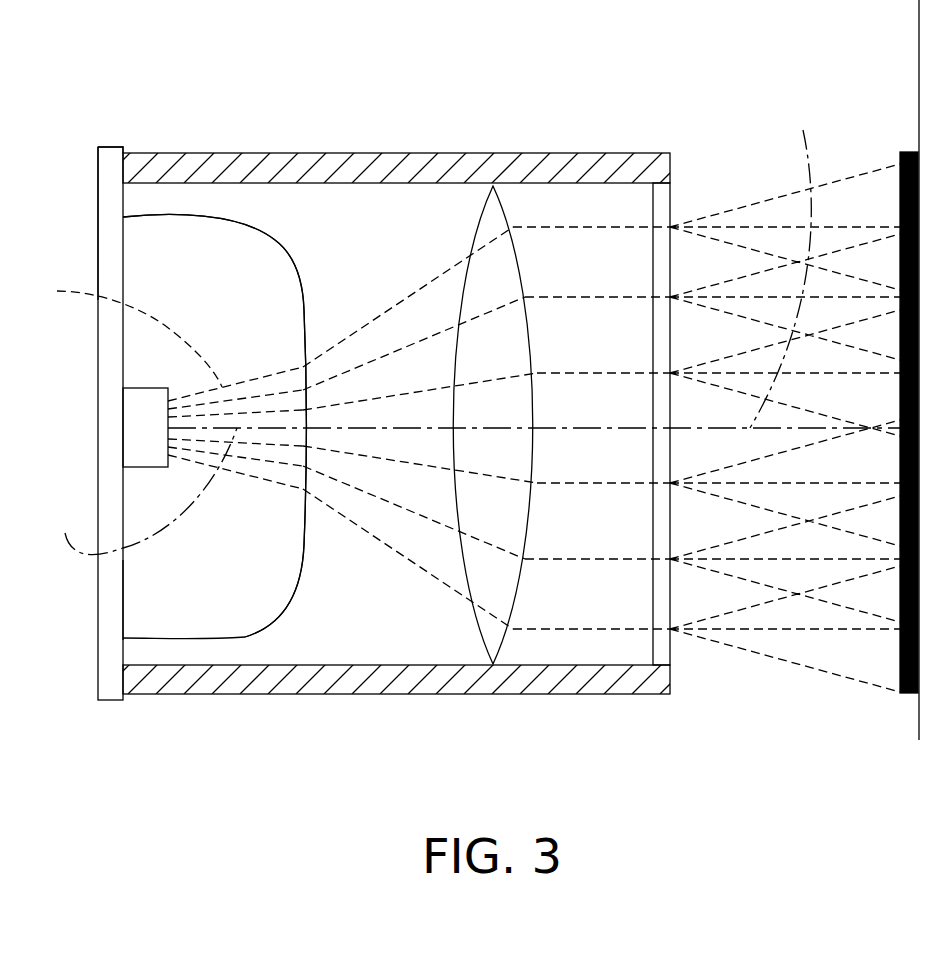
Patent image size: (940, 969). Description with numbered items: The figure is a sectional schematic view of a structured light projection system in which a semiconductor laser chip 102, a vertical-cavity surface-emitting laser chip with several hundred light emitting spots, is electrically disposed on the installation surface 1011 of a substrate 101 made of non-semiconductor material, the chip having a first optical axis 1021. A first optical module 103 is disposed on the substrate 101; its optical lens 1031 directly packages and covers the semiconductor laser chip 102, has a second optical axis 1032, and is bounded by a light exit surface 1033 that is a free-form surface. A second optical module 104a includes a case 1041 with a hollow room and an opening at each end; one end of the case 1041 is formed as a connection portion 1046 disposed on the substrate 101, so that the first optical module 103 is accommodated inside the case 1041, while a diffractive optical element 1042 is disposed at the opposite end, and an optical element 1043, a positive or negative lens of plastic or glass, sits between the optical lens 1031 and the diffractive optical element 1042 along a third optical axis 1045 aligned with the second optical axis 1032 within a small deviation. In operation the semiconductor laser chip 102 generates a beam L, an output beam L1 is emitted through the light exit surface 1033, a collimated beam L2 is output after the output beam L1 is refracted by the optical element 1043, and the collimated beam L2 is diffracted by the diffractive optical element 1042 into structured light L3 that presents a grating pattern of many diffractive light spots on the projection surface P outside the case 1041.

The substrate 101 is at (108, 441).
The installation surface 1011 is at (142, 612).
The semiconductor laser chip 102 is at (147, 398).
The first optical axis 1021 is at (135, 491).
The first optical module 103 is at (348, 90).
The optical lens 1031 is at (187, 238).
The second optical axis 1032 is at (356, 428).
The light exit surface 1033 is at (323, 297).
The second optical module 104a is at (800, 90).
The case 1041 is at (593, 177).
The diffractive optical element 1042 is at (660, 209).
The optical element 1043 is at (490, 205).
The third optical axis 1045 is at (787, 262).
The connection portion 1046 is at (118, 167).
The beam L is at (168, 382).
The output beam L1 is at (420, 572).
The collimated beam L2 is at (550, 630).
The structured light L3 is at (763, 603).
The projection surface P is at (918, 121).